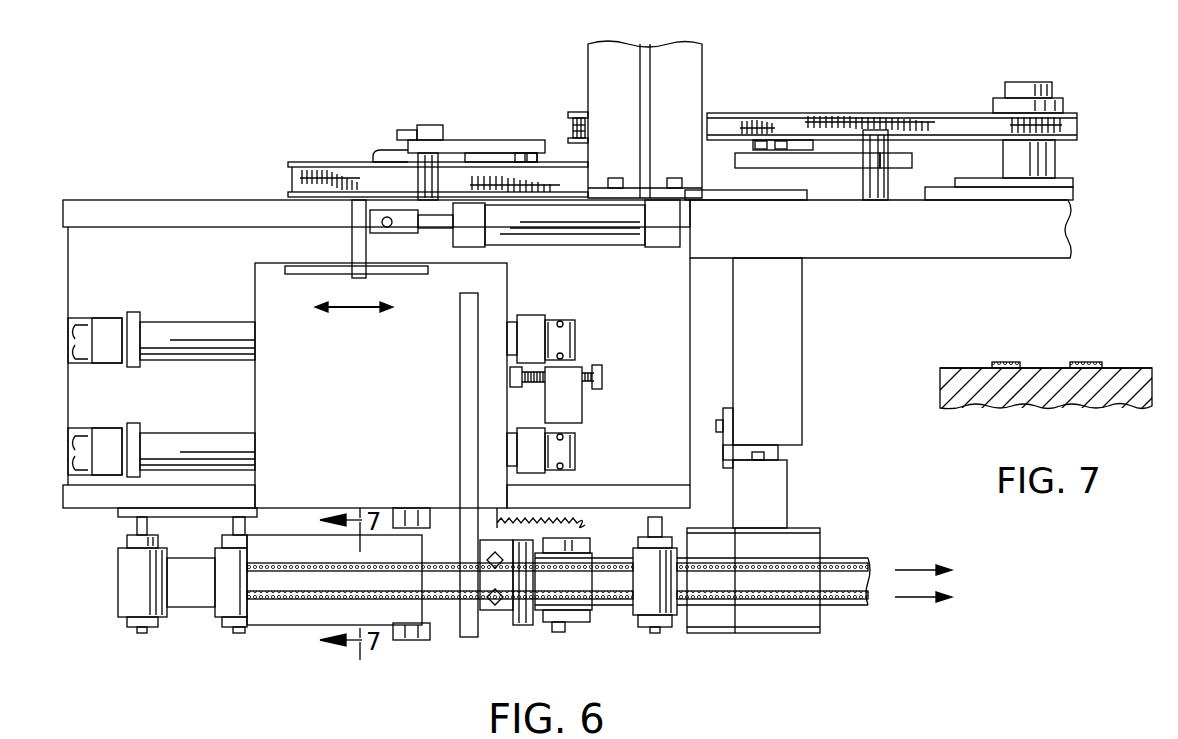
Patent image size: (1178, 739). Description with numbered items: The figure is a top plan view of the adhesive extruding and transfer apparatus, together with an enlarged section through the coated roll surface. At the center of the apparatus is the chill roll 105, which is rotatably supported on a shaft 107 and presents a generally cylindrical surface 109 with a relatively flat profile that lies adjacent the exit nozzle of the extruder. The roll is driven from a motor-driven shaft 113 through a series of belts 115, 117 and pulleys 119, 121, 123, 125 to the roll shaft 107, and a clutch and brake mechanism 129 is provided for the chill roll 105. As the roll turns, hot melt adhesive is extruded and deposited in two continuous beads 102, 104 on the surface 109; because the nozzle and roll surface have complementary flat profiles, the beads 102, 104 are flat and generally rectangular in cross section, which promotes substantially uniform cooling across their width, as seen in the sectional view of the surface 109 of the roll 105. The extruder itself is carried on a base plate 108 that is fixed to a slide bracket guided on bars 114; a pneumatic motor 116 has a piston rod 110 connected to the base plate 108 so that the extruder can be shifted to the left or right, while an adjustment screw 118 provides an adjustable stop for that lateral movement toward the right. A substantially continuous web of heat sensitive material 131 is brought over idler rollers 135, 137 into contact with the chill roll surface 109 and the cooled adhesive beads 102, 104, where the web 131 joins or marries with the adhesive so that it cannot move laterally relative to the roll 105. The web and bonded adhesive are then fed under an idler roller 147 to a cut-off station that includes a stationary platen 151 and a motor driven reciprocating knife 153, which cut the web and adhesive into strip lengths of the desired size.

In FIG. 6, the adhesive bead 102 is at (270, 563).
In FIG. 7, the adhesive bead 102 is at (1006, 362).
In FIG. 6, the adhesive bead 104 is at (270, 599).
In FIG. 7, the adhesive bead 104 is at (1086, 362).
In FIG. 6, the chill roll 105 is at (292, 625).
In FIG. 7, the chill roll 105 is at (968, 408).
In FIG. 6, the shaft 107 is at (430, 125).
In FIG. 6, the base plate 108 is at (390, 391).
In FIG. 7, the cylindrical surface 109 is at (958, 366).
In FIG. 6, the piston rod 110 is at (449, 228).
In FIG. 6, the motor-driven shaft 113 is at (1016, 85).
In FIG. 6, the bars 114 is at (158, 330).
In FIG. 6, the belt 115 is at (866, 125).
In FIG. 6, the pneumatic motor 116 is at (600, 240).
In FIG. 6, the belt 117 is at (356, 170).
In FIG. 6, the adjustment screw 118 is at (595, 387).
In FIG. 6, the pulley 119 is at (1000, 145).
In FIG. 6, the pulley 121 is at (777, 113).
In FIG. 6, the pulley 123 is at (580, 138).
In FIG. 6, the pulley 125 is at (308, 162).
In FIG. 6, the clutch and brake mechanism 129 is at (718, 96).
In FIG. 6, the web of heat sensitive material 131 is at (185, 600).
In FIG. 6, the idler roller 135 is at (120, 600).
In FIG. 6, the idler roller 137 is at (225, 605).
In FIG. 6, the idler roller 147 is at (640, 608).
In FIG. 6, the stationary platen 151 is at (815, 548).
In FIG. 6, the reciprocating knife 153 is at (790, 502).